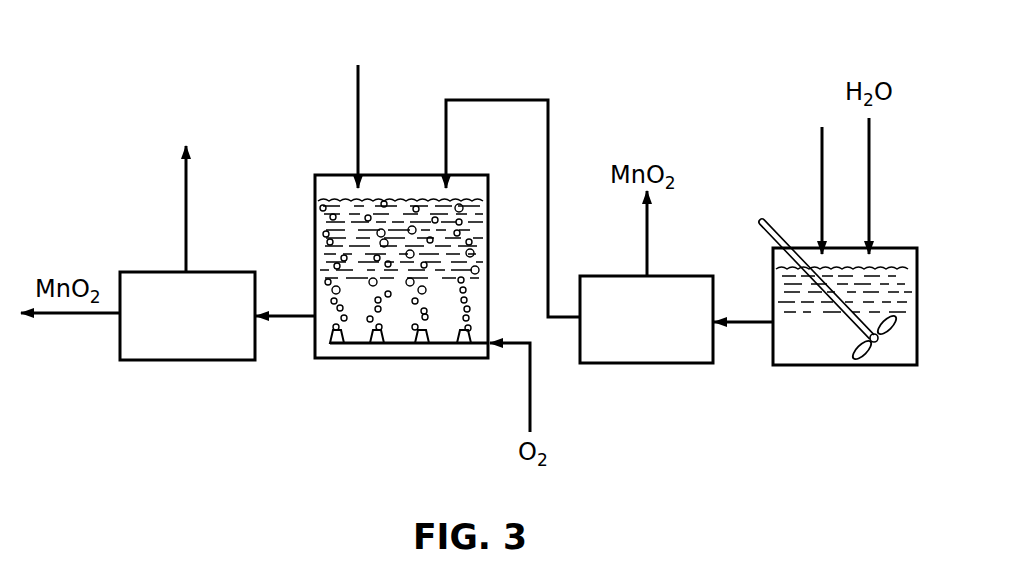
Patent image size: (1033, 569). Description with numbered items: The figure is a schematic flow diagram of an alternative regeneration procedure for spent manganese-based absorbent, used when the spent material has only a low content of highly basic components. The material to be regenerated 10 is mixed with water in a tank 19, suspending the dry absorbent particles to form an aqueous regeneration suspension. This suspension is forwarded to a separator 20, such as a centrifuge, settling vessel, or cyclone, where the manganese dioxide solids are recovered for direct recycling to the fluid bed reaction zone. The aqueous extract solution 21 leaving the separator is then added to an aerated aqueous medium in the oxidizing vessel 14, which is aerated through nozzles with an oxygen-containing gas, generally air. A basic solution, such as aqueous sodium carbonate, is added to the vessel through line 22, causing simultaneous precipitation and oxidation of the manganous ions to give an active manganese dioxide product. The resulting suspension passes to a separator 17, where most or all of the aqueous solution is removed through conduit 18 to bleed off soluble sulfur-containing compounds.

The material to be regenerated 10 is at (822, 167).
The oxidizing vessel 14 is at (404, 360).
The separator 17 is at (186, 352).
The conduit 18 is at (186, 210).
The tank 19 is at (810, 345).
The separator 20 is at (628, 348).
The aqueous extract solution 21 is at (508, 100).
The line 22 is at (358, 107).